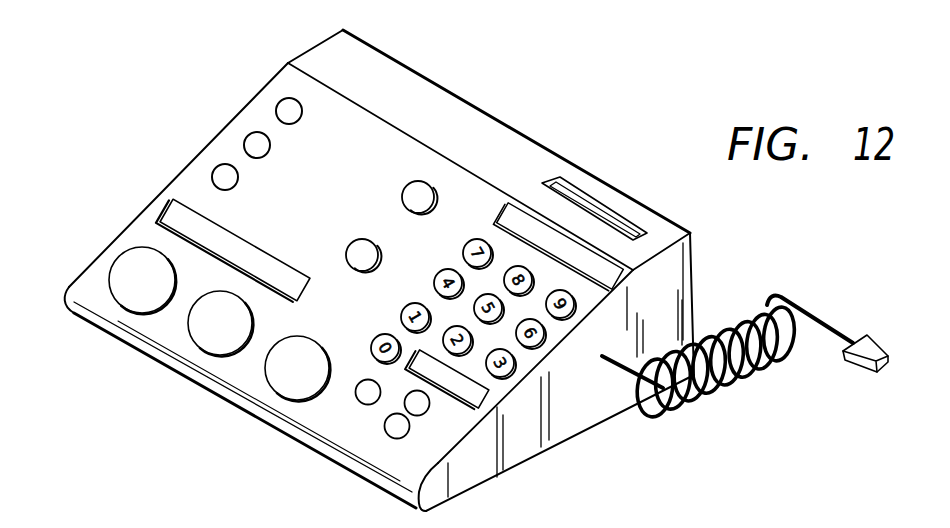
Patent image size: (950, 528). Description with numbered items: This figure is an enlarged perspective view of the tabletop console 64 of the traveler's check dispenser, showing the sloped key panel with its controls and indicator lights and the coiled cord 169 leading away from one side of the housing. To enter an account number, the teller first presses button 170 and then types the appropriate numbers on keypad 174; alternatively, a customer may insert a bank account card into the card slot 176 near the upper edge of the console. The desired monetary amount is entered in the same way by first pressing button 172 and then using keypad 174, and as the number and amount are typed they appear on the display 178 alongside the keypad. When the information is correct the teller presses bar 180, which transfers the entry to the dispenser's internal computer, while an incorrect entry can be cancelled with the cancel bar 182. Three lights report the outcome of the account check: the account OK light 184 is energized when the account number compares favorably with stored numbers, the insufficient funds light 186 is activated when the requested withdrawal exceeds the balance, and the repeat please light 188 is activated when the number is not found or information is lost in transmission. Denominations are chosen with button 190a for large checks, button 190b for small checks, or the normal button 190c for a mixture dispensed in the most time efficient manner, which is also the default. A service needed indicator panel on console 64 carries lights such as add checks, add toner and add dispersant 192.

The tabletop console 64 is at (534, 140).
The coiled cord 169 is at (769, 366).
The button 170 is at (431, 207).
The button 172 is at (356, 269).
The keypad 174 is at (547, 362).
The card slot 176 is at (668, 234).
The display 178 is at (625, 280).
The bar 180 is at (405, 367).
The cancel bar 182 is at (158, 220).
The account OK light 184 is at (278, 101).
The insufficient funds light 186 is at (244, 138).
The repeat please light 188 is at (214, 175).
The button 190a is at (120, 307).
The button 190b is at (188, 323).
The normal button 190c is at (272, 389).
The service needed indicator lights 192 is at (405, 404).